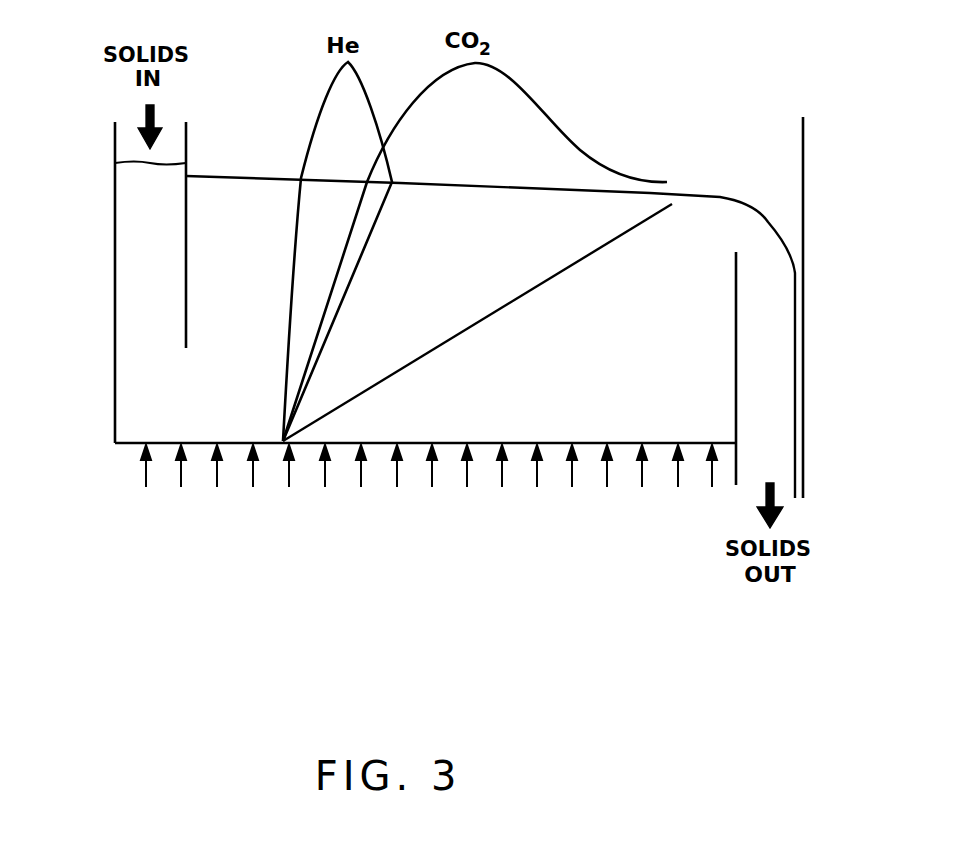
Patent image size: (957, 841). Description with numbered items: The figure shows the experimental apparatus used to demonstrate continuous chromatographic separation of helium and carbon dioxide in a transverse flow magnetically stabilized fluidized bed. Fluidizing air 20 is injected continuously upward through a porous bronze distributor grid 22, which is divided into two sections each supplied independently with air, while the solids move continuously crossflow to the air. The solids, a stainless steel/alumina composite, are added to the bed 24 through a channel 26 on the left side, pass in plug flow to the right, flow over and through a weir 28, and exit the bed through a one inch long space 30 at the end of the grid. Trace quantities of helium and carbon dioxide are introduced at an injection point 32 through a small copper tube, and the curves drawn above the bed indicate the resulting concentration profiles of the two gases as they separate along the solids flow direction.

The fluidizing air 20 is at (397, 487).
The porous bronze distributor grid 22 is at (445, 443).
The bed 24 is at (597, 383).
The channel 26 is at (138, 263).
The weir 28 is at (736, 316).
The space 30 is at (775, 341).
The injection point 32 is at (282, 438).